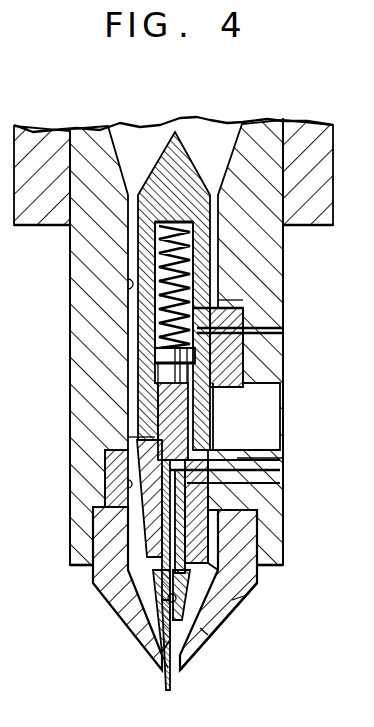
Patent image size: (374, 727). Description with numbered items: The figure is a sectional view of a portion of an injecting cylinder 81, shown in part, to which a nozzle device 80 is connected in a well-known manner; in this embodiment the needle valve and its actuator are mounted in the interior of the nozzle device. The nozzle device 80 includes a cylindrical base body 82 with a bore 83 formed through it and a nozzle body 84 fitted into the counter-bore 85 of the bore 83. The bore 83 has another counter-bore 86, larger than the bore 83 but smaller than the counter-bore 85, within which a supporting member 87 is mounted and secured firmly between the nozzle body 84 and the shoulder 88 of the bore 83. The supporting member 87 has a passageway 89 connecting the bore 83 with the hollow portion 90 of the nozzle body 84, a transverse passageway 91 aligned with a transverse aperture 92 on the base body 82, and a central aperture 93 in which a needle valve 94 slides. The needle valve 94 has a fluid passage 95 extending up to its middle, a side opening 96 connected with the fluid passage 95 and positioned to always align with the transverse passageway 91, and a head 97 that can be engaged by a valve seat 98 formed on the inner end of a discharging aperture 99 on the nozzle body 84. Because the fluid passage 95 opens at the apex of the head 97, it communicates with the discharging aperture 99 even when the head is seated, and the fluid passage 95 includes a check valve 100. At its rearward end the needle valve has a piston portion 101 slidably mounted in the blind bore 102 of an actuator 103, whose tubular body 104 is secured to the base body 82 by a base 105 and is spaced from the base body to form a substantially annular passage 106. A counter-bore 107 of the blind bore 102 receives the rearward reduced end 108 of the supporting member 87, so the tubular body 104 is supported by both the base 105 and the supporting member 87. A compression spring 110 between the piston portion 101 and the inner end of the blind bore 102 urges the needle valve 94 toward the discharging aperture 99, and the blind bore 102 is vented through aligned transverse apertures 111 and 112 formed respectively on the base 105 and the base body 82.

The nozzle device 80 is at (292, 373).
The injecting cylinder 81 is at (324, 163).
The cylindrical base body 82 is at (82, 273).
The bore 83 is at (128, 285).
The nozzle body 84 is at (216, 612).
The counter-bore 85 is at (261, 576).
The counter-bore 86 is at (284, 470).
The supporting member 87 is at (112, 468).
The shoulder 88 is at (228, 449).
The passageway 89 is at (128, 492).
The hollow portion 90 is at (241, 599).
The transverse passageway 91 is at (236, 500).
The transverse aperture 92 is at (262, 486).
The central aperture 93 is at (250, 420).
The needle valve 94 is at (166, 402).
The fluid passage 95 is at (133, 576).
The side opening 96 is at (205, 440).
The head 97 is at (206, 633).
The valve seat 98 is at (163, 665).
The discharging aperture 99 is at (173, 665).
The check valve 100 is at (173, 598).
The piston portion 101 is at (157, 354).
The blind bore 102 is at (195, 266).
The actuator 103 is at (195, 148).
The tubular body 104 is at (163, 178).
The base 105 is at (244, 319).
The annular passage 106 is at (131, 249).
The counter-bore 107 is at (211, 412).
The rearward reduced end 108 is at (152, 438).
The compression spring 110 is at (190, 243).
The transverse aperture 111 is at (214, 310).
The transverse aperture 112 is at (284, 331).